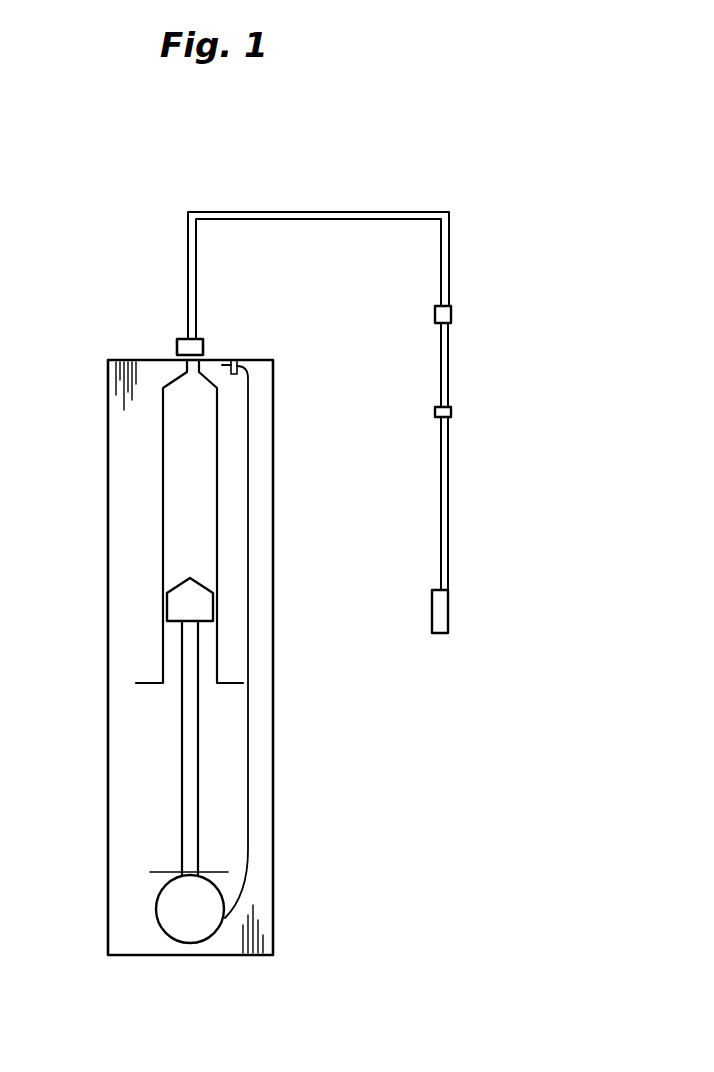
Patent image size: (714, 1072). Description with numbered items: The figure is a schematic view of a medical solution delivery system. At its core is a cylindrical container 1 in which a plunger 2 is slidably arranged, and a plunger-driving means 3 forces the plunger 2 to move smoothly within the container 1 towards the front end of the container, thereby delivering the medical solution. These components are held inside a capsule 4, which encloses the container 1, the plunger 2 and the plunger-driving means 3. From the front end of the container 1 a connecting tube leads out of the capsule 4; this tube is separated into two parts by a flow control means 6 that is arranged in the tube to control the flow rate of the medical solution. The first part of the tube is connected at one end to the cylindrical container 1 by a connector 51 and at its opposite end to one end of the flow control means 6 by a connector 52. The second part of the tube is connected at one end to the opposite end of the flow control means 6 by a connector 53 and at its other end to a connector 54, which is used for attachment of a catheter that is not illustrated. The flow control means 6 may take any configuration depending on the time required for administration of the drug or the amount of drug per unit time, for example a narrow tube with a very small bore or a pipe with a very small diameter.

The cylindrical container 1 is at (217, 530).
The plunger 2 is at (182, 803).
The plunger-driving means 3 is at (248, 750).
The capsule 4 is at (108, 495).
The connector 51 is at (203, 341).
The connector 52 is at (451, 314).
The connector 53 is at (451, 412).
The connector 54 is at (448, 620).
The flow control means 6 is at (443, 380).